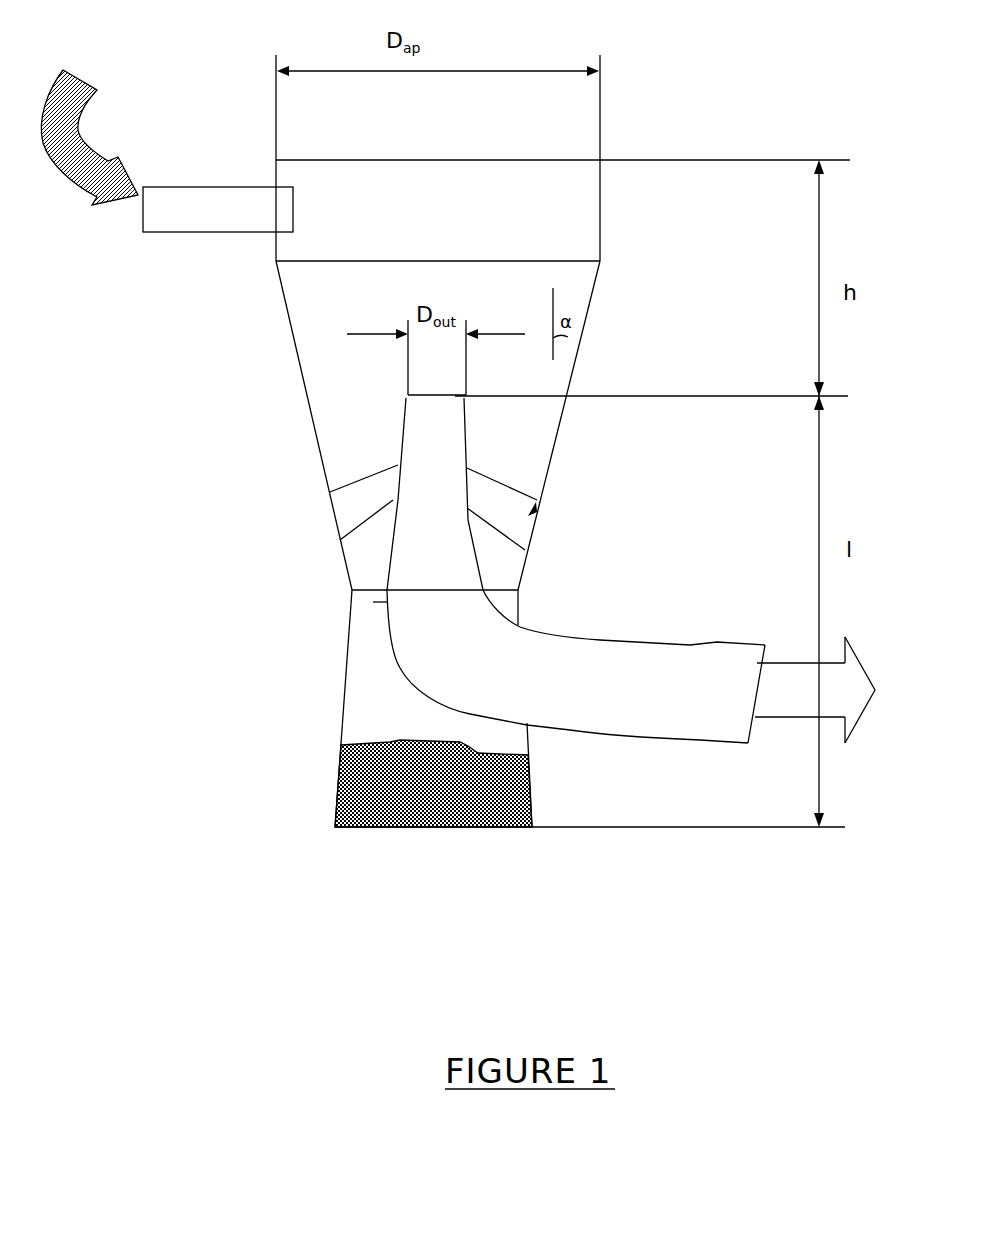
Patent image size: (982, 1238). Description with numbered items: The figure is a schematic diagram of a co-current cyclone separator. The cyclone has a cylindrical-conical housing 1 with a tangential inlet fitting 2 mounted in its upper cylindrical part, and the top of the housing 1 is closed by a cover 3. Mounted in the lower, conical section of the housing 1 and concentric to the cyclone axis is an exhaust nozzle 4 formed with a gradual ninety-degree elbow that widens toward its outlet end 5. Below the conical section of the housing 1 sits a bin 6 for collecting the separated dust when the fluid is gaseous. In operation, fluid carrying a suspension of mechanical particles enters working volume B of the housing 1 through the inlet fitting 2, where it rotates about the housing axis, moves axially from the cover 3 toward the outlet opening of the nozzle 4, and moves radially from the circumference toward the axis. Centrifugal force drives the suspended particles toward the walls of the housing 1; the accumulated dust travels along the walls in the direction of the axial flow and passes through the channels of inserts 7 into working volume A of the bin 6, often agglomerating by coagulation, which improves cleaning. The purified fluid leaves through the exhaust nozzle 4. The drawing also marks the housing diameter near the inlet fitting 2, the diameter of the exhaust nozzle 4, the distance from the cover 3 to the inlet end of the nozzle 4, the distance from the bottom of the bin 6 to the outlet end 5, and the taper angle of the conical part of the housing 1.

The cylindrical-conical housing 1 is at (575, 357).
The tangential inlet fitting 2 is at (173, 210).
The cover 3 is at (519, 160).
The exhaust nozzle 4 is at (423, 403).
The outlet end of exhaust nozzle 5 is at (745, 703).
The bin 6 is at (337, 793).
The inserts 7 is at (373, 488).
The working volume of bin A is at (420, 715).
The working volume of housing B is at (338, 298).